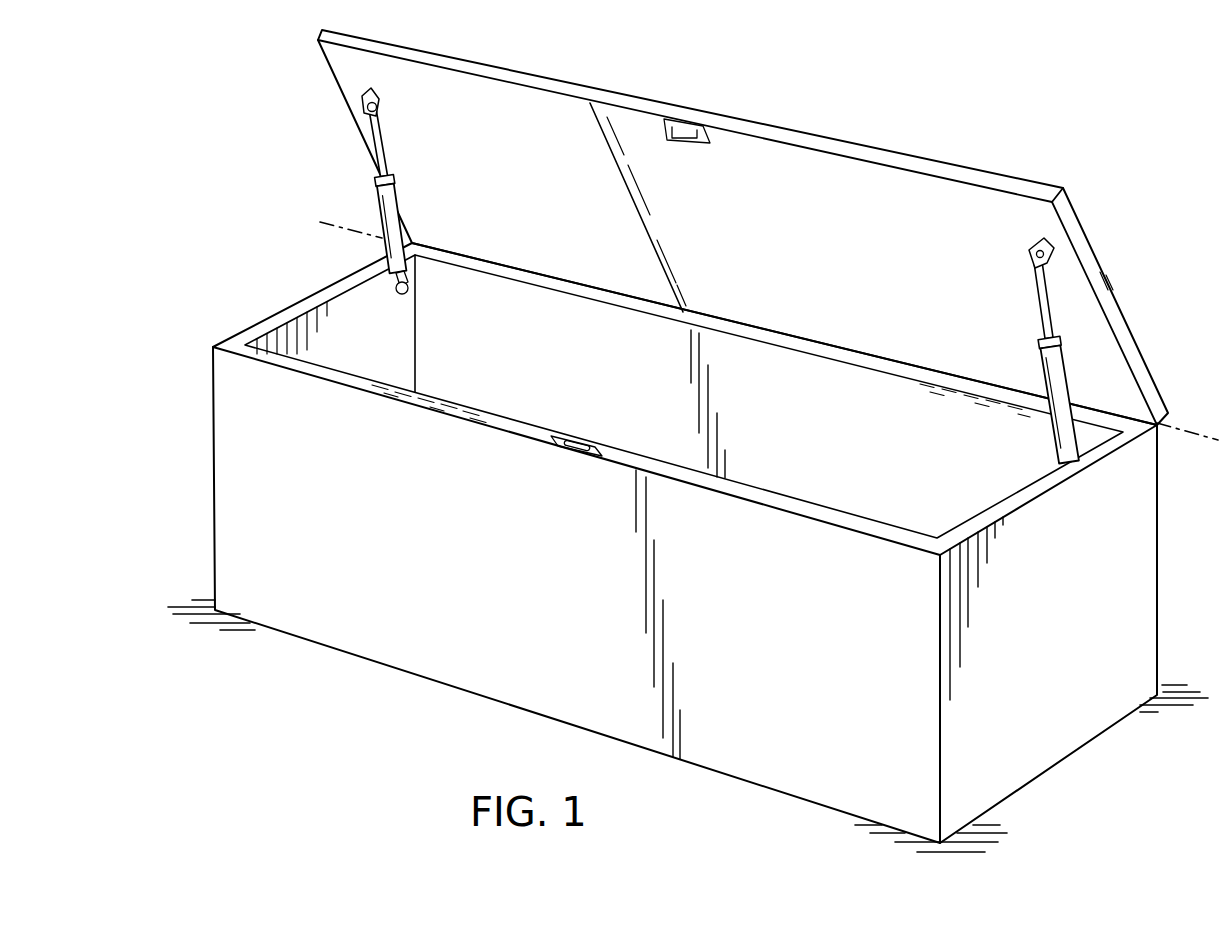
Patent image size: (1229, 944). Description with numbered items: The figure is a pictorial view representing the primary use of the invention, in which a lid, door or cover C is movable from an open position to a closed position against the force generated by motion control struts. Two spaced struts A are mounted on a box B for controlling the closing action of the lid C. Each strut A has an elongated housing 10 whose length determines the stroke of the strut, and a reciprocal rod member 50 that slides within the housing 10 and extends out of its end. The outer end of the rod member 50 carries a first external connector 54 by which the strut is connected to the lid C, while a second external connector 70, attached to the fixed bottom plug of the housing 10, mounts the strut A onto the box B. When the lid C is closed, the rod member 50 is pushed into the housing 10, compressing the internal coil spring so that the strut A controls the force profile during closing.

The elongated housing 10 is at (409, 199).
The rod member 50 is at (387, 145).
The first external connector 54 is at (382, 108).
The second external connector 70 is at (395, 297).
The strut A is at (742, 278).
The box B is at (1138, 588).
The lid C is at (1083, 245).